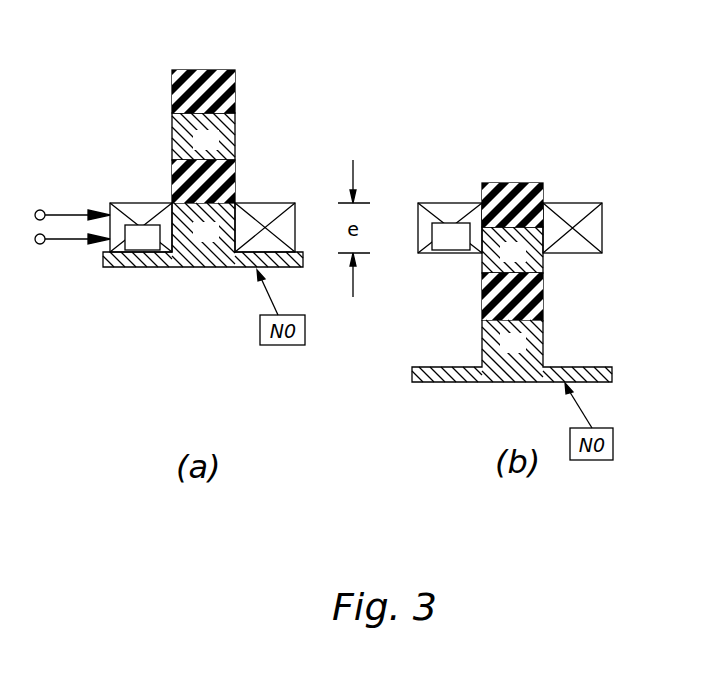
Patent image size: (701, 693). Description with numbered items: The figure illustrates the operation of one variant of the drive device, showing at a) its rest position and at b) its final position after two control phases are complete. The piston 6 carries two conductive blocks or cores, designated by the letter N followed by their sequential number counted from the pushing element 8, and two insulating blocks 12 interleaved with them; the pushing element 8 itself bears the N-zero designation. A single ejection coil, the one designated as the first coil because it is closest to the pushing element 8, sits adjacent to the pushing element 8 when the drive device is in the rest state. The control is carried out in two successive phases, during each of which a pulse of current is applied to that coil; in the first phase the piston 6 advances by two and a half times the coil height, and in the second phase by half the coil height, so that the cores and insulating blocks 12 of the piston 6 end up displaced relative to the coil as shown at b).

The piston 6 is at (214, 60).
The insulating block 12 is at (172, 157).
The pushing element 8 is at (197, 268).